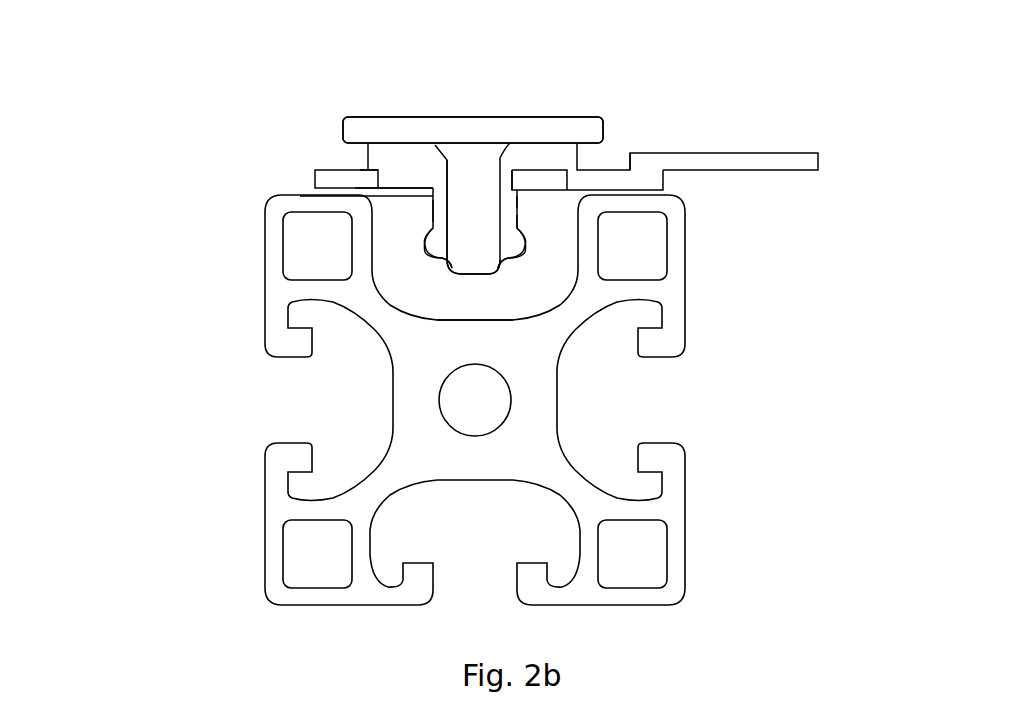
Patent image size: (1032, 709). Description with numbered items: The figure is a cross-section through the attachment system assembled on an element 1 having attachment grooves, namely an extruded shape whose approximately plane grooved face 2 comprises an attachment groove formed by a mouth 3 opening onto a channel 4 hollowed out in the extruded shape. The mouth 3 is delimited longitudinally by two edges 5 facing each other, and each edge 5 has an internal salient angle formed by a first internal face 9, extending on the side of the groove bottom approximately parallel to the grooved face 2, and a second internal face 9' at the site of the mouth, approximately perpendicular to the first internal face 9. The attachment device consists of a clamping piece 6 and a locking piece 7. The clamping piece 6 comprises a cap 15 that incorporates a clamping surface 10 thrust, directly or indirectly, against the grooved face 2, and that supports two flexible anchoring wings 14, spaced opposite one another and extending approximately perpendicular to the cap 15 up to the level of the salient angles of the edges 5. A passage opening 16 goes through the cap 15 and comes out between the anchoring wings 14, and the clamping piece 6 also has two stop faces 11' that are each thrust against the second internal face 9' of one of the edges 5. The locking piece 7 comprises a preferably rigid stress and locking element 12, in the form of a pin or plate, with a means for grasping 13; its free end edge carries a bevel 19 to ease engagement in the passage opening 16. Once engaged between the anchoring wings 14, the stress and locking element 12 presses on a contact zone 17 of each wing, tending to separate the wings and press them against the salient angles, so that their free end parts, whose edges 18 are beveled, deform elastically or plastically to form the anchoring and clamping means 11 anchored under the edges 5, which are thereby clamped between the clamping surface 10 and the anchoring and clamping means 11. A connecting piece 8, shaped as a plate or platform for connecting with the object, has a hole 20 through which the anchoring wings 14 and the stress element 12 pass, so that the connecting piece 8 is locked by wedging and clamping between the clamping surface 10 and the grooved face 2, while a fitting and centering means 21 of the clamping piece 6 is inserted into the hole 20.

The element having attachment groove 1 is at (233, 470).
The grooved face 2 is at (315, 185).
The mouth of the attachment groove 3 is at (510, 188).
The channel of the attachment groove 4 is at (457, 297).
The edges of the groove 5 is at (408, 228).
The clamping piece 6 is at (363, 153).
The locking piece 7 is at (338, 105).
The connecting piece 8 is at (778, 147).
The first internal face 9 is at (415, 281).
The second internal face 9' is at (472, 215).
The clamping surface 10 is at (367, 170).
The anchoring and clamping means 11 is at (500, 290).
The stop faces 11' is at (431, 215).
The stress and locking element 12 is at (480, 258).
The means for grasping 13 is at (567, 130).
The anchoring wings 14 is at (423, 198).
The cap 15 is at (560, 153).
The passage opening 16 is at (513, 200).
The contact zone 17 is at (447, 212).
The beveled edge of the anchoring wing 18 is at (438, 253).
The bevel of the stress and locking element 19 is at (450, 267).
The hole of the connecting piece 20 is at (360, 187).
The fitting and centering means 21 is at (391, 182).